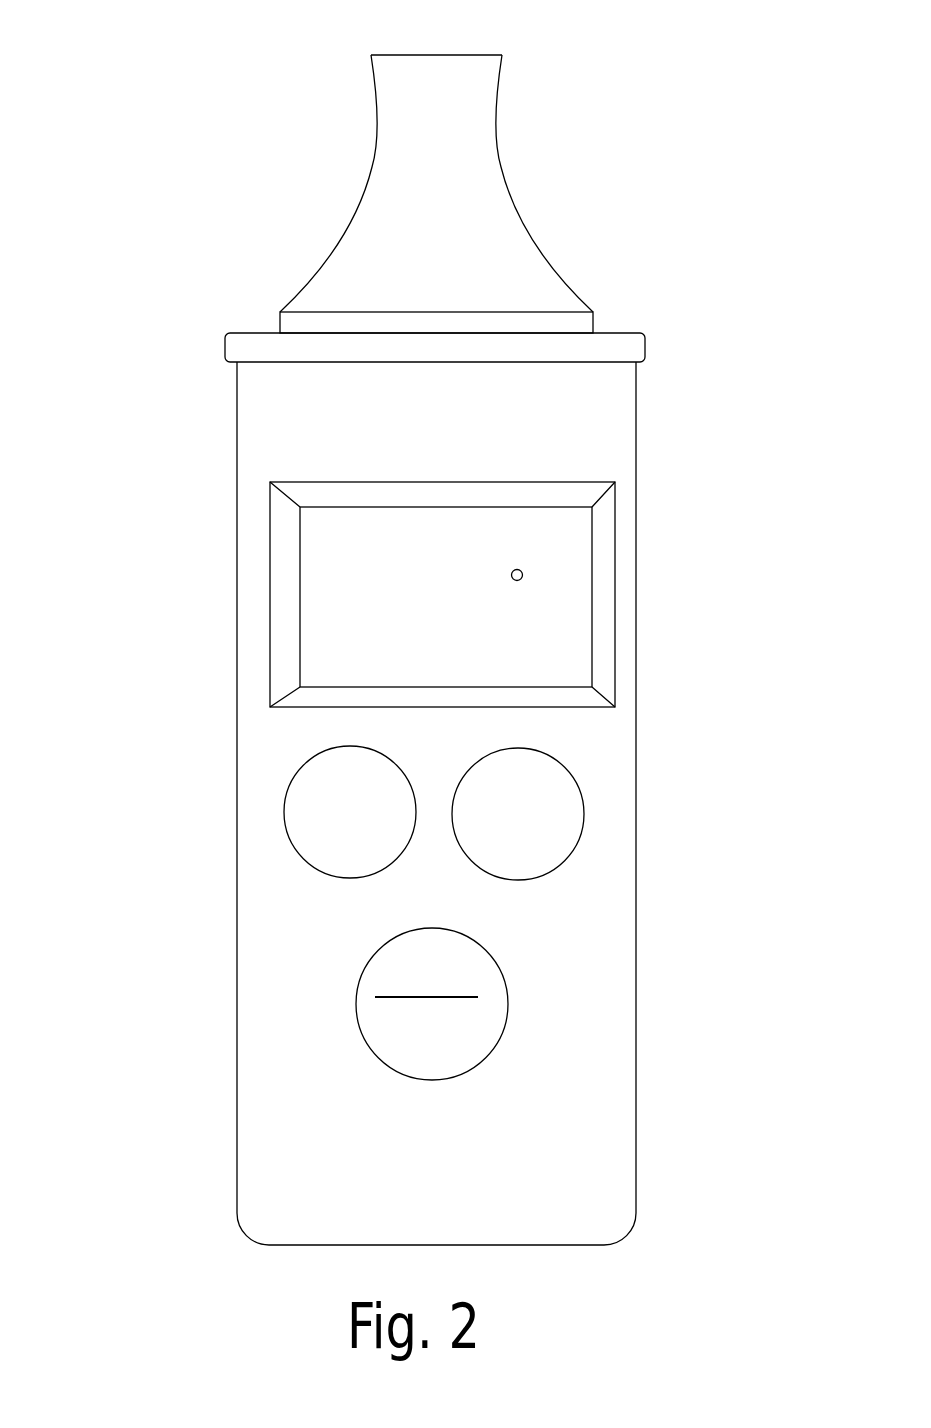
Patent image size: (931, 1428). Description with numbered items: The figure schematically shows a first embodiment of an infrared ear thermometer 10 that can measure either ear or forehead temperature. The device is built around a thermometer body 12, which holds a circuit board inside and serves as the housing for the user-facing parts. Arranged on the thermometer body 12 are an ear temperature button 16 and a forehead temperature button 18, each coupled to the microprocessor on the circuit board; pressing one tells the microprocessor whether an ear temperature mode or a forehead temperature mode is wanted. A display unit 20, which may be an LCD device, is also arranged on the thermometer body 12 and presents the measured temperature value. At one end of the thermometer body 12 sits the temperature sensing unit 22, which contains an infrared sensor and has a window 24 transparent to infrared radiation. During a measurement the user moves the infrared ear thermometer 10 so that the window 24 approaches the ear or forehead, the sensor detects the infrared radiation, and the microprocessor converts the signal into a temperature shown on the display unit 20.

The infrared ear thermometer 10 is at (689, 275).
The thermometer body 12 is at (663, 523).
The ear temperature button 16 is at (579, 788).
The forehead temperature button 18 is at (289, 838).
The display unit 20 is at (273, 509).
The temperature sensing unit 22 is at (515, 182).
The window 24 is at (413, 53).